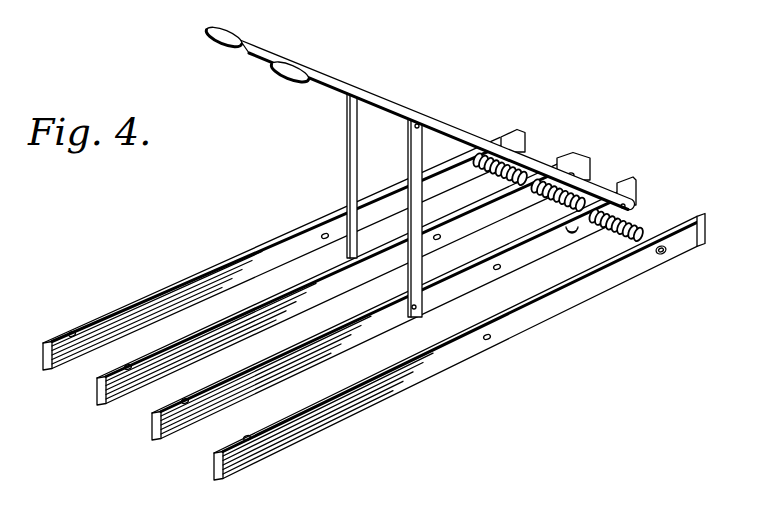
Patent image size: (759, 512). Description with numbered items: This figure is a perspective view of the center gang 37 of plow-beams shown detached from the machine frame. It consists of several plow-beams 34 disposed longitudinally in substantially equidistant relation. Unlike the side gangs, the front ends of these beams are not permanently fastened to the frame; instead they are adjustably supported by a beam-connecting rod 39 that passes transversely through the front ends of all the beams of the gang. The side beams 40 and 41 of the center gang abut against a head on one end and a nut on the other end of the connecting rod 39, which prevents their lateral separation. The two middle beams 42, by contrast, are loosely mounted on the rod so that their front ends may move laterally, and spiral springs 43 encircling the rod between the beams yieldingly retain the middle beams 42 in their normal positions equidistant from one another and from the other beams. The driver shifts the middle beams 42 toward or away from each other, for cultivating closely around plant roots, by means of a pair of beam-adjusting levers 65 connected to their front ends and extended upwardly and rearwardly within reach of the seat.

The plow-beams 34 is at (132, 306).
The center gang 37 is at (271, 253).
The beam-connecting rod 39 is at (661, 256).
The side beam of the center gang 40 is at (694, 216).
The side beam of the center gang 41 is at (513, 129).
The middle beams 42 is at (630, 182).
The spiral springs 43 is at (495, 171).
The beam-adjusting levers 65 is at (345, 66).